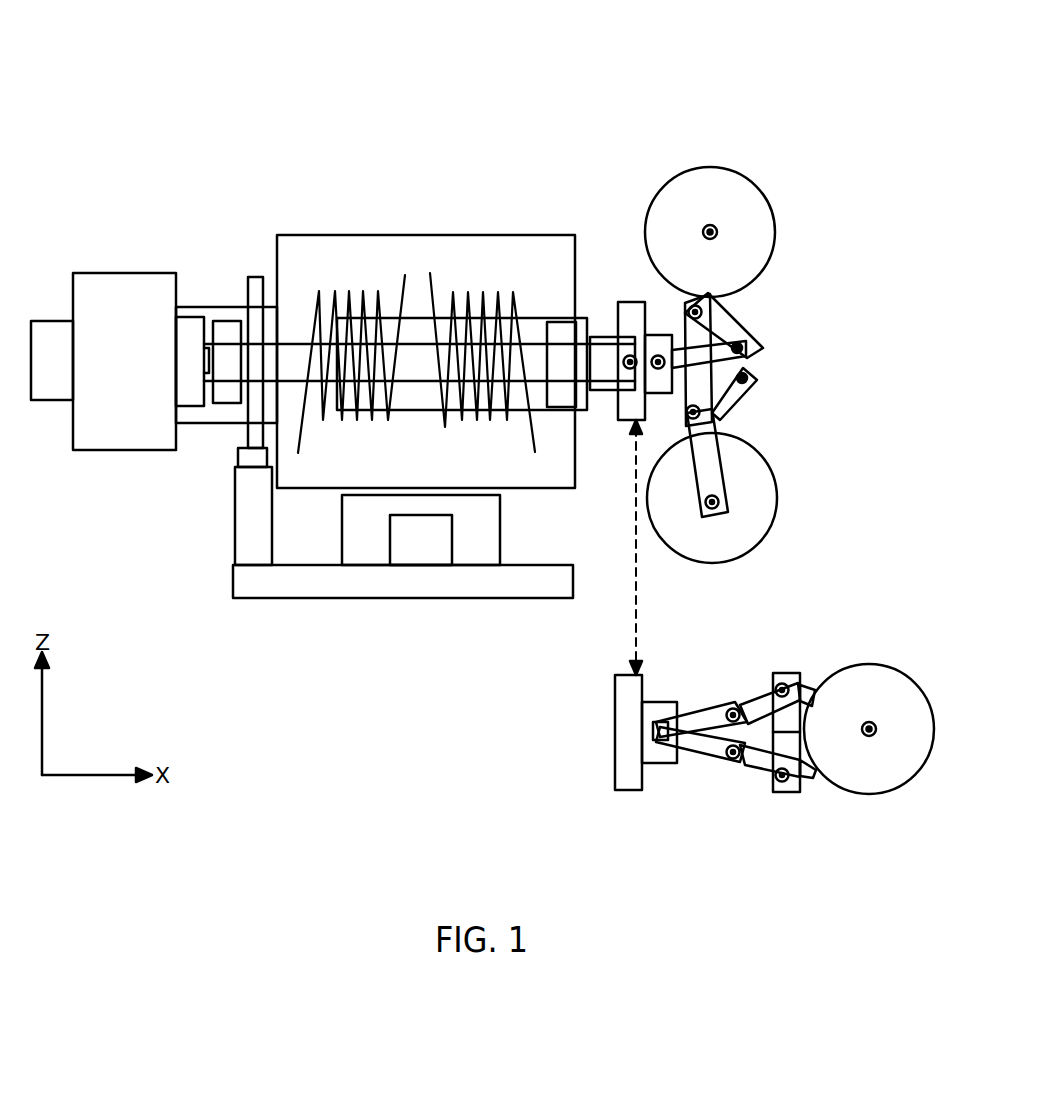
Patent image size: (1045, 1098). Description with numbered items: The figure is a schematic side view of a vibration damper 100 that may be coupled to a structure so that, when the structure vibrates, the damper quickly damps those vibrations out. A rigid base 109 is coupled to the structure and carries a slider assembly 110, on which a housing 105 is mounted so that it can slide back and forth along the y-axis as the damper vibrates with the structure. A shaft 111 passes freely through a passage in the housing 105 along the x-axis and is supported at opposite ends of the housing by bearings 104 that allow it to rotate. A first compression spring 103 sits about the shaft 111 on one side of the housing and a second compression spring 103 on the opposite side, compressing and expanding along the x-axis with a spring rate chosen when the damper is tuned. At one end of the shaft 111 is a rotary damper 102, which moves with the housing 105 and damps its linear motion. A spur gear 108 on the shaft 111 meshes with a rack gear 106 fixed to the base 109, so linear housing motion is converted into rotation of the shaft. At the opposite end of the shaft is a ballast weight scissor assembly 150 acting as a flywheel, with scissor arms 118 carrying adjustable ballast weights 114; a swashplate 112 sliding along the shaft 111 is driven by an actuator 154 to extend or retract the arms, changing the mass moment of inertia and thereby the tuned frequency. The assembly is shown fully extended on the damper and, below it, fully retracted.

The vibration damper 100 is at (120, 106).
The rotary damper 102 is at (154, 392).
The compression spring 103 is at (416, 276).
The bearing 104 is at (394, 281).
The housing 105 is at (438, 387).
The rack gear 106 is at (199, 507).
The spur gear 108 is at (188, 394).
The base 109 is at (400, 637).
The slider assembly 110 is at (338, 568).
The shaft 111 is at (496, 473).
The swashplate 112 is at (618, 458).
The adjustable ballast weight 114 is at (789, 482).
The scissor arm 118 is at (734, 536).
The ballast weight scissor assembly 150 is at (828, 255).
The actuator 154 is at (462, 288).